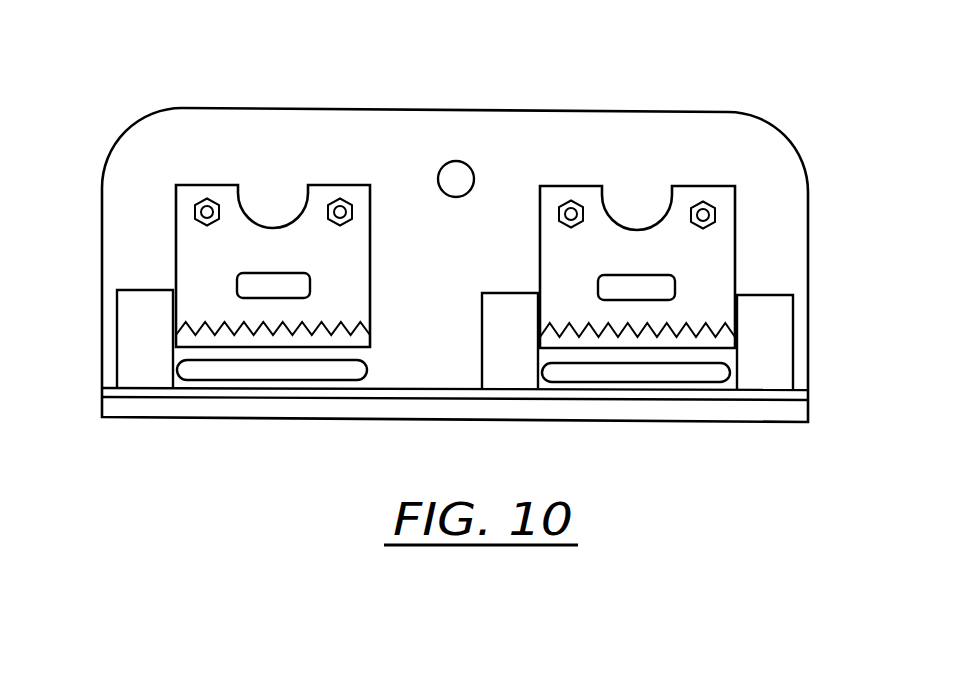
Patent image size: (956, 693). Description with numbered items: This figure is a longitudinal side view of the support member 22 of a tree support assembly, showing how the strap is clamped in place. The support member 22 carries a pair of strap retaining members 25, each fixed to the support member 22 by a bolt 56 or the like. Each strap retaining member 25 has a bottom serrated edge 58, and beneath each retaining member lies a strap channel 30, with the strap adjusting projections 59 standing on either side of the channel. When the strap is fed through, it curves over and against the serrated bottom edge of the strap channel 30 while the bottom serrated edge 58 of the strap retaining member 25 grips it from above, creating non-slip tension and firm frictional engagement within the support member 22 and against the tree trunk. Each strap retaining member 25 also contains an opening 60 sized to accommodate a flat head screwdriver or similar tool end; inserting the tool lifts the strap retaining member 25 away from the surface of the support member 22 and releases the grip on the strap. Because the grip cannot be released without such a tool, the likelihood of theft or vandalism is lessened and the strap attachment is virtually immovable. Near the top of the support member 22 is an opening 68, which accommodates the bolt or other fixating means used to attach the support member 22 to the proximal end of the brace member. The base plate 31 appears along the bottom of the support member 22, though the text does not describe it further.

The support member 22 is at (557, 88).
The strap retaining member 25 is at (193, 255).
The strap channel 30 is at (203, 363).
The base plate 31 is at (257, 410).
The bolt 56 is at (207, 198).
The bottom serrated edge 58 is at (337, 328).
The strap adjusting projections 59 is at (142, 335).
The opening 60 is at (283, 273).
The opening 68 is at (453, 160).